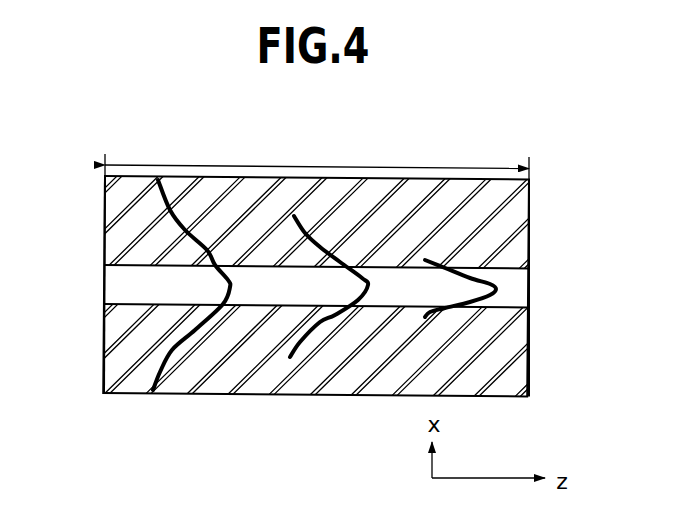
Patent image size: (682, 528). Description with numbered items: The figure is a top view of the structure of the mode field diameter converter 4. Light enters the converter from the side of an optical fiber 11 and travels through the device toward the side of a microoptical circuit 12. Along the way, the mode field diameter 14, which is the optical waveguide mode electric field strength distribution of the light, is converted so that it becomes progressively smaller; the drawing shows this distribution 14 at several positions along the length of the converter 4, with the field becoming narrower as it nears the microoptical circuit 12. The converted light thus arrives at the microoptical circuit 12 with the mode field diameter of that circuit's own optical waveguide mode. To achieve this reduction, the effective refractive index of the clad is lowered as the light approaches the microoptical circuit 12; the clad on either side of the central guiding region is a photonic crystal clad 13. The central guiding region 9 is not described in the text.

The mode field diameter converter 4 is at (317, 158).
The core 9 is at (413, 277).
The optical fiber 11 is at (90, 290).
The microoptical circuit 12 is at (580, 299).
The photonic crystal clad 13 is at (120, 312).
The mode field diameter 14 is at (191, 224).